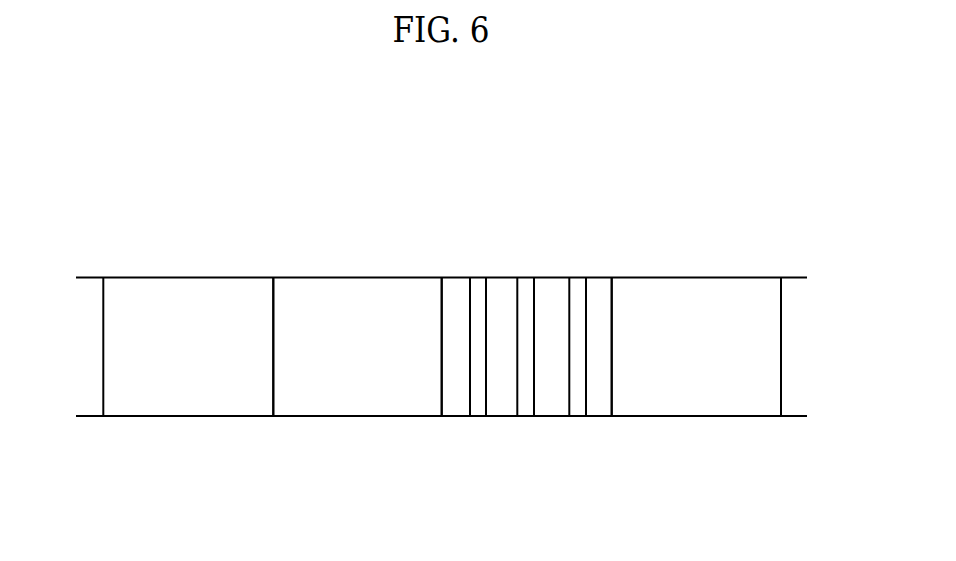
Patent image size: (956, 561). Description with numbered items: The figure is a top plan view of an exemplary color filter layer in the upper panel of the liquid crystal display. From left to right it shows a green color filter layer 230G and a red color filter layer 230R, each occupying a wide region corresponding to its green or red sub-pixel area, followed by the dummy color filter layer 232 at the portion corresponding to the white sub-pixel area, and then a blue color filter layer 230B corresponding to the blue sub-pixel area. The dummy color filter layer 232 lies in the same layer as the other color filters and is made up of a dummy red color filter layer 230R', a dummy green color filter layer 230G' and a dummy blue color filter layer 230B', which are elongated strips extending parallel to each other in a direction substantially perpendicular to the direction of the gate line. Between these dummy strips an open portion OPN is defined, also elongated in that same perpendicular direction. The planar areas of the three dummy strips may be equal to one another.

The green color filter layer 230G is at (188, 347).
The red color filter layer 230R is at (357, 347).
The blue color filter layer 230B is at (696, 347).
The dummy red color filter layer 230R' is at (451, 380).
The dummy green color filter layer 230G' is at (528, 380).
The dummy blue color filter layer 230B' is at (603, 380).
The open portion OPN is at (600, 292).
The dummy color filter layer 232 is at (410, 478).